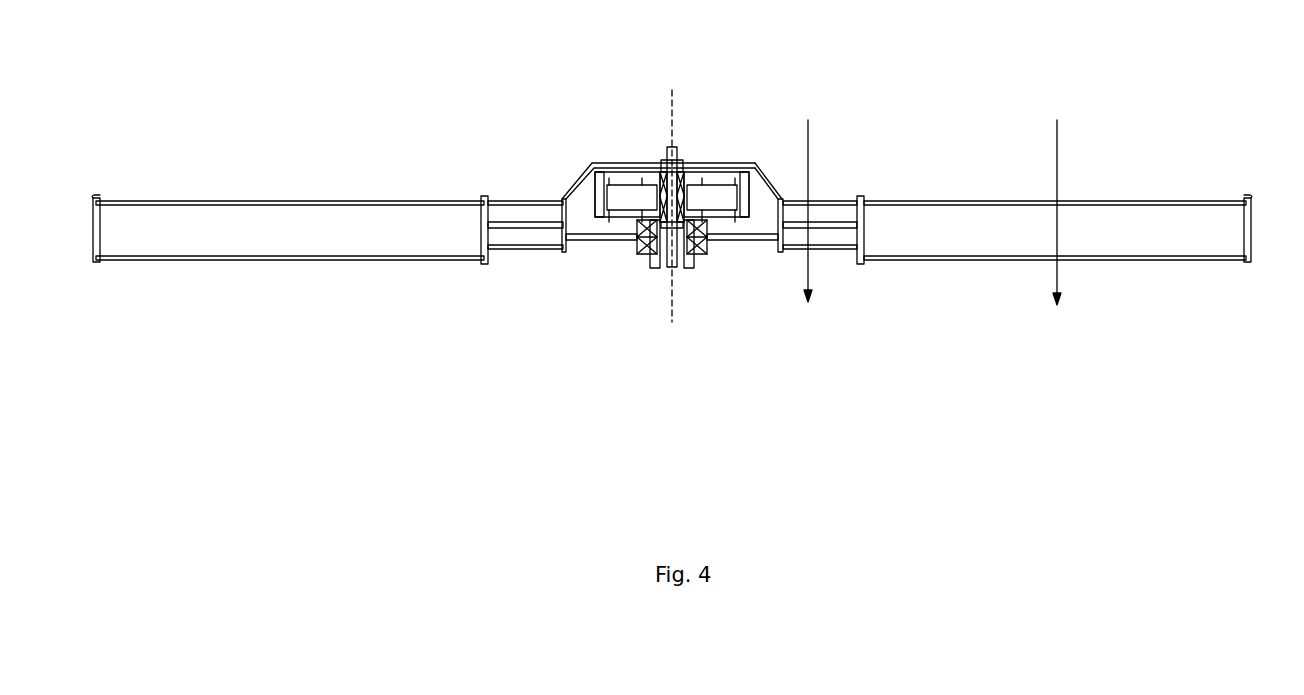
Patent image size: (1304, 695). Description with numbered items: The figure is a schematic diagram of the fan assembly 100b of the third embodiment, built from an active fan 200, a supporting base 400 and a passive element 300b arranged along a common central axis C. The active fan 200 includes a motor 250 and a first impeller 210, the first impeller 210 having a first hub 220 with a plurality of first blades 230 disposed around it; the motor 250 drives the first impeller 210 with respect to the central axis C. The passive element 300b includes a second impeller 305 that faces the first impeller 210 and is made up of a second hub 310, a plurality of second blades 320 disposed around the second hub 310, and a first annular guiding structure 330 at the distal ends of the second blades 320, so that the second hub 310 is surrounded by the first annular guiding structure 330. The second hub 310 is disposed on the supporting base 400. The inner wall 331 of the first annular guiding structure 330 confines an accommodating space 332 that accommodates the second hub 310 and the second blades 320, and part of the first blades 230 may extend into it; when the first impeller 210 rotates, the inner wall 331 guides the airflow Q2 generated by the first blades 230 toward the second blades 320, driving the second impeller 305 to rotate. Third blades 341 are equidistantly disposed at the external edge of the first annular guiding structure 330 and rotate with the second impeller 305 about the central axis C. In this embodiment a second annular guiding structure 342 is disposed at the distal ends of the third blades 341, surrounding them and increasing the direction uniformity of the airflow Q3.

The fan assembly 100b is at (1260, 109).
The active fan 200 is at (793, 47).
The first impeller 210 is at (820, 97).
The first hub 220 is at (717, 164).
The first blades 230 is at (792, 212).
The motor 250 is at (706, 195).
The passive element 300b is at (1295, 403).
The second impeller 305 is at (925, 361).
The second hub 310 is at (726, 241).
The second blades 320 is at (832, 249).
The first annular guiding structure 330 is at (861, 264).
The inner wall 331 is at (858, 198).
The accommodating space 332 is at (826, 222).
The third blades 341 is at (933, 237).
The second annular guiding structure 342 is at (1247, 263).
The supporting base 400 is at (652, 270).
The central axis C is at (672, 224).
The airflow Q2 is at (805, 223).
The airflow Q3 is at (1047, 232).